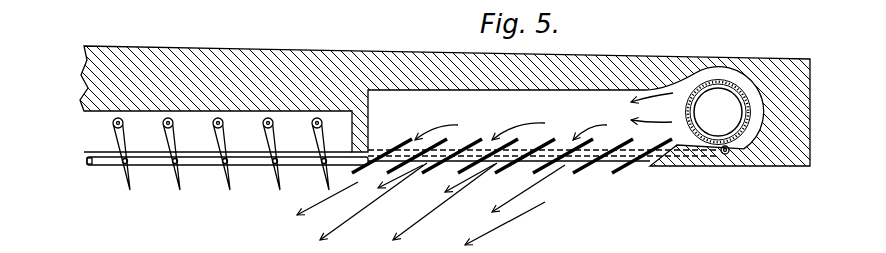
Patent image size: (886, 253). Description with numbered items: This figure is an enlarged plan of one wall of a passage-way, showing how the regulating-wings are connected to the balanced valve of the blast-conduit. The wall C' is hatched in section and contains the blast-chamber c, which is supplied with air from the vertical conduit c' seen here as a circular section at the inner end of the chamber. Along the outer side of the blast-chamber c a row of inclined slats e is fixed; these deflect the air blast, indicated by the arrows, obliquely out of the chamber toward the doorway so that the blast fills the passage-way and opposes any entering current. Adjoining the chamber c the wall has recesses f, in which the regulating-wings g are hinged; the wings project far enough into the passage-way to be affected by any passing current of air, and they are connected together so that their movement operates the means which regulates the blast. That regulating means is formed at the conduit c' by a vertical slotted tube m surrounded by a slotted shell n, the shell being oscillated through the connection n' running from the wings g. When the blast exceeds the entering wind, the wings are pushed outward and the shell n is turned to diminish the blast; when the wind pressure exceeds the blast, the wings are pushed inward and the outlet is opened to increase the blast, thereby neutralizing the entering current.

The outer wall C' is at (445, 90).
The blast-chamber c is at (520, 127).
The vertical conduit c' is at (718, 112).
The vertical slotted tube m is at (737, 90).
The slotted shell n is at (741, 174).
The connection n' is at (543, 174).
The recess f is at (221, 154).
The regulating-wing g is at (168, 183).
The inclined slat e is at (545, 168).